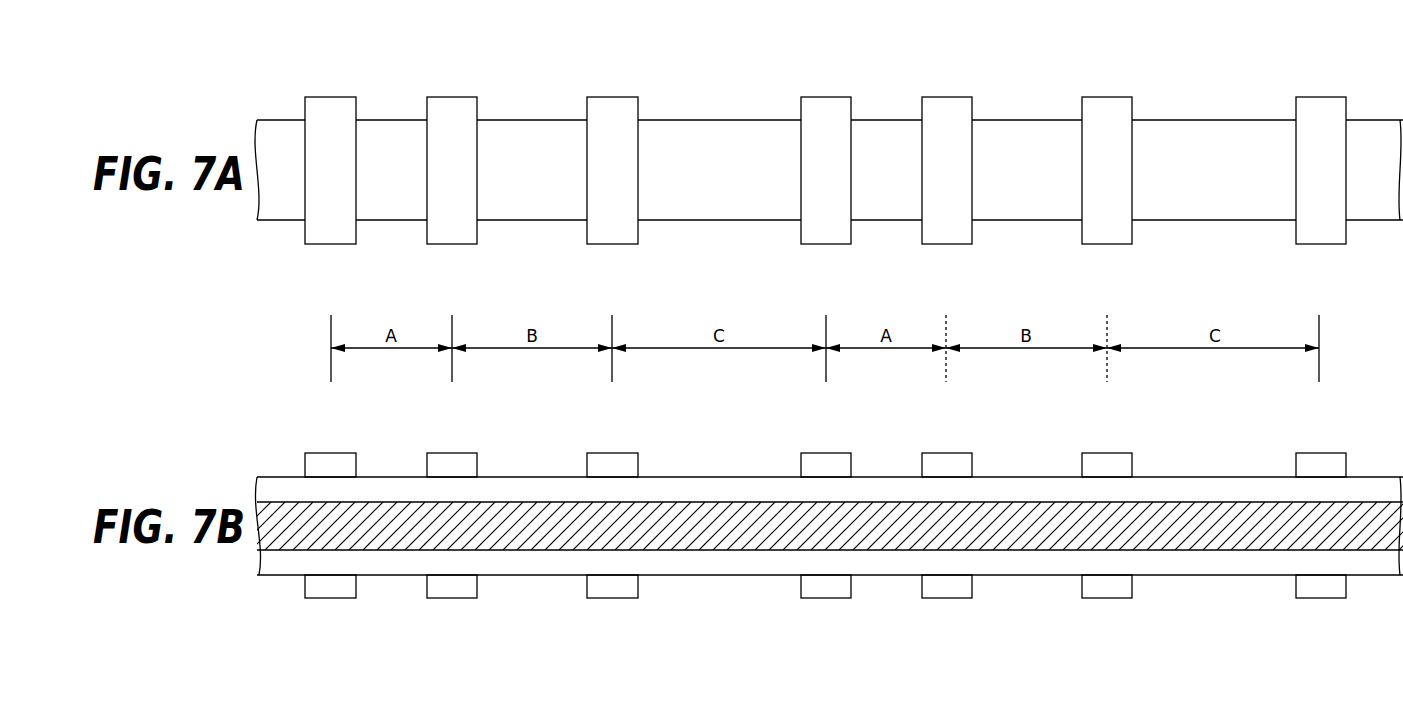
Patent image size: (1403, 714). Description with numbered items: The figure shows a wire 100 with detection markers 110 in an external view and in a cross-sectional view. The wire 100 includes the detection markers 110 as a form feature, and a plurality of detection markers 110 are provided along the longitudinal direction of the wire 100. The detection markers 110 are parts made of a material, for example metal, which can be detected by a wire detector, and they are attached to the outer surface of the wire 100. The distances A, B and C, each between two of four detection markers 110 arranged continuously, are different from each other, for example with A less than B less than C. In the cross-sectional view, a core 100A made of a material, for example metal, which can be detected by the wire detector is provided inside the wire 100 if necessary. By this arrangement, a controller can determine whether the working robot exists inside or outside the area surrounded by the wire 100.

In FIG. 7A, the wire 100 is at (718, 120).
In FIG. 7B, the wire 100 is at (806, 577).
In FIG. 7B, the core 100A is at (1210, 550).
In FIG. 7A, the detection markers 110 is at (1324, 97).
In FIG. 7B, the detection markers 110 is at (1324, 634).